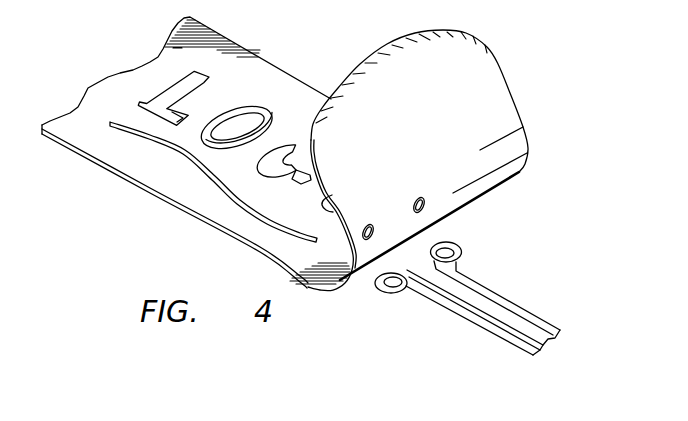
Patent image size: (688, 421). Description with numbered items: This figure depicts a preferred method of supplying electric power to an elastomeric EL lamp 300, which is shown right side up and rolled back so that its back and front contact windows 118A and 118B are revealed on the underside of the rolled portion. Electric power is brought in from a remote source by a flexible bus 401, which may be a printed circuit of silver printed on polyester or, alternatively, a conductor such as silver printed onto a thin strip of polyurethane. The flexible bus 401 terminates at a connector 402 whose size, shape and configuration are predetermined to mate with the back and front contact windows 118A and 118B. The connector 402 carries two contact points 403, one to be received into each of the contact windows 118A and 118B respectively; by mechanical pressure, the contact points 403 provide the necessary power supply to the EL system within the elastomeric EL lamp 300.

The elastomeric EL lamp 300 is at (477, 83).
The back contact window 118A is at (446, 246).
The front contact window 118B is at (393, 278).
The flexible bus 401 is at (503, 298).
The connector 402 is at (463, 251).
The contact points 403 is at (403, 293).